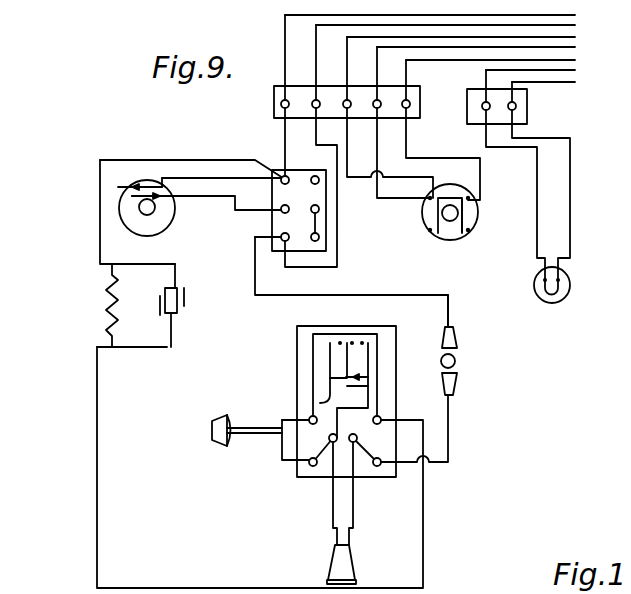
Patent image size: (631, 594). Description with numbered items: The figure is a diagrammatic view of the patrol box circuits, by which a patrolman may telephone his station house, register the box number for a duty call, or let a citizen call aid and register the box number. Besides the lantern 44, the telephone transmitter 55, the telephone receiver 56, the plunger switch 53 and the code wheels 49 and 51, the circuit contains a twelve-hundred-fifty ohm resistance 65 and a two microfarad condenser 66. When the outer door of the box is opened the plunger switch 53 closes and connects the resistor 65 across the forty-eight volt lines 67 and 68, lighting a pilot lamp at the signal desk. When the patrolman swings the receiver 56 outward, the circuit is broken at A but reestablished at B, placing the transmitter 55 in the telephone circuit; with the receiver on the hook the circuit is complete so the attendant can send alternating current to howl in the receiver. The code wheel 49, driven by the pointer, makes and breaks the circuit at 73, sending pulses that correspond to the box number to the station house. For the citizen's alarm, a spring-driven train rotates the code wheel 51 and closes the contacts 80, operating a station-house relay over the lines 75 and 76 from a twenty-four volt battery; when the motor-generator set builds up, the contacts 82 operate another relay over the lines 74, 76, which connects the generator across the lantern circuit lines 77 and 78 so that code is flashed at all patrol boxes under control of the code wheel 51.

The line 68 is at (285, 31).
The line 67 is at (315, 44).
The line 76 is at (347, 70).
The line 75 is at (565, 50).
The line 74 is at (443, 61).
The lantern circuit line 78 is at (573, 70).
The lantern circuit line 77 is at (567, 85).
The code wheel 49 is at (148, 181).
The circuit make-and-break point 73 is at (118, 187).
The resistance 65 is at (108, 318).
The condenser 66 is at (183, 305).
The code wheel 51 is at (453, 242).
The contacts 80 is at (430, 231).
The contacts 82 is at (466, 226).
The lantern 44 is at (571, 285).
The plunger switch 53 is at (455, 361).
The circuit point B is at (346, 377).
The circuit point A is at (368, 386).
The telephone transmitter 55 is at (223, 447).
The telephone receiver 56 is at (343, 562).